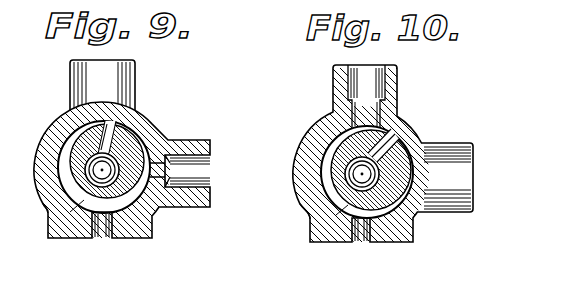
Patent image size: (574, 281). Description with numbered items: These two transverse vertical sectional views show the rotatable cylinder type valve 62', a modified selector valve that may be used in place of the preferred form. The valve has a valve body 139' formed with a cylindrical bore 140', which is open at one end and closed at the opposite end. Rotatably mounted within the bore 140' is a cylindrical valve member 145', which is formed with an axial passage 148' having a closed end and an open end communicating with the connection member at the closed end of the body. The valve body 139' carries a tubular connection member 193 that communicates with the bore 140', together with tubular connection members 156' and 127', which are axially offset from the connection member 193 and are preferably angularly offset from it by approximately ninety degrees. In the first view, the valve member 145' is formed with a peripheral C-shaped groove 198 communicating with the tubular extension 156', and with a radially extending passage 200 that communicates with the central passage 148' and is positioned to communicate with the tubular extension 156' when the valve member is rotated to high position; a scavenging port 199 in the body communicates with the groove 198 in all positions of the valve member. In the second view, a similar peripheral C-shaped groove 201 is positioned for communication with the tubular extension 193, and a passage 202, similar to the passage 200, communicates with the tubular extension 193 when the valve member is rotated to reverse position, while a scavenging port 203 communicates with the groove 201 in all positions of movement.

In FIG. 9, the rotatable cylinder type valve 62' is at (115, 169).
In FIG. 10, the rotatable cylinder type valve 62' is at (375, 153).
In FIG. 9, the tubular connection member 193 is at (136, 90).
In FIG. 10, the tubular connection member 193 is at (398, 99).
In FIG. 9, the radially extending passage 200 is at (116, 122).
In FIG. 9, the tubular connection member 156' is at (184, 149).
In FIG. 9, the axial passage 148' is at (62, 156).
In FIG. 10, the axial passage 148' is at (362, 174).
In FIG. 9, the cylindrical bore 140' is at (77, 167).
In FIG. 10, the cylindrical bore 140' is at (335, 172).
In FIG. 9, the valve body 139' is at (27, 220).
In FIG. 10, the valve body 139' is at (286, 221).
In FIG. 9, the cylindrical valve member 145' is at (136, 177).
In FIG. 10, the cylindrical valve member 145' is at (398, 184).
In FIG. 9, the peripheral C-shaped groove 198 is at (78, 203).
In FIG. 9, the scavenging port 199 is at (101, 239).
In FIG. 10, the passage 202 is at (396, 137).
In FIG. 10, the tubular connection member 127' is at (463, 165).
In FIG. 10, the peripheral C-shaped groove 201 is at (343, 212).
In FIG. 10, the scavenging port 203 is at (359, 243).